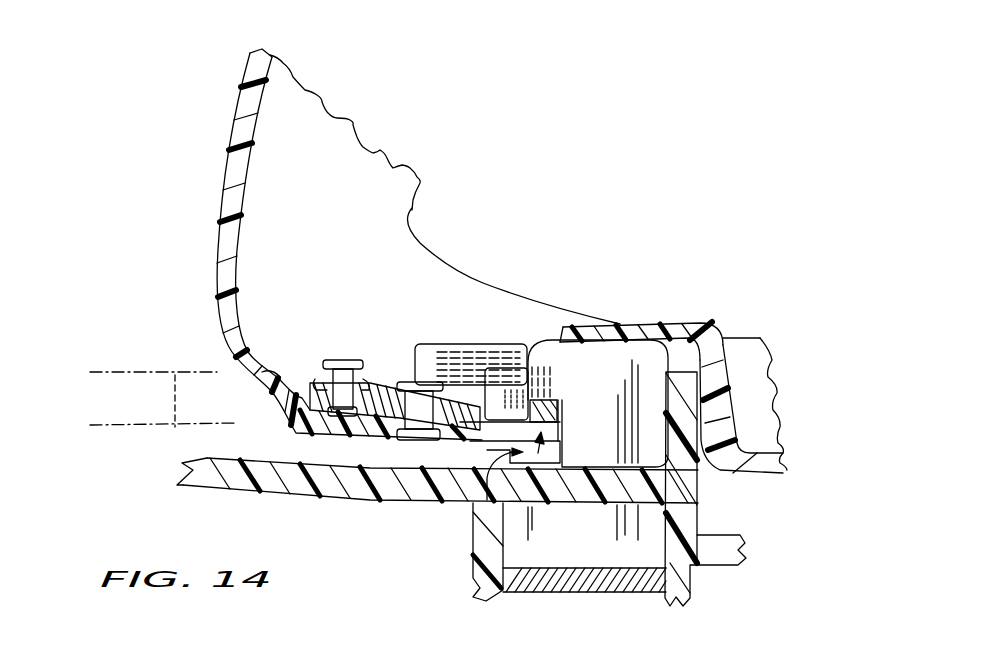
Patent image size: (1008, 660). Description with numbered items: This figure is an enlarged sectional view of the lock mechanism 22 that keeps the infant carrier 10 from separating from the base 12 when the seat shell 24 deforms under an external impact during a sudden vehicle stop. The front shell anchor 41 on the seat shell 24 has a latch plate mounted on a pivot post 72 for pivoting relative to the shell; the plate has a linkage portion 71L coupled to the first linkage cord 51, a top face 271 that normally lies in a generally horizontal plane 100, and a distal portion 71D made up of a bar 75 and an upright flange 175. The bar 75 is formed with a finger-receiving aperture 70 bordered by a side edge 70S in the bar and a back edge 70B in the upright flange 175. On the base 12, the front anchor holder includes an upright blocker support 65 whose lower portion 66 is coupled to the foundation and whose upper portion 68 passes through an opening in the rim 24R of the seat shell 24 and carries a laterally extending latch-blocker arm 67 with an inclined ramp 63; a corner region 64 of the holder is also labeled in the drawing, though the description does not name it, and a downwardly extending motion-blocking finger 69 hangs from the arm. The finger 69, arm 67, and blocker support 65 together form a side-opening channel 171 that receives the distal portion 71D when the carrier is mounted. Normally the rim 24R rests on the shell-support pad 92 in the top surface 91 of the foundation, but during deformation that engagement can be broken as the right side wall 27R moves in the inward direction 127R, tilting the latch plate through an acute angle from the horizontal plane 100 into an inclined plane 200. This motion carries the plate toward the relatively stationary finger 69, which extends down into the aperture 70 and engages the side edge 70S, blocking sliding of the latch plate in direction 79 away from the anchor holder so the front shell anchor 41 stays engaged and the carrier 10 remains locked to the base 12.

The seat shell 24 is at (220, 151).
The infant carrier 10 is at (206, 217).
The inward direction 127R is at (347, 193).
The right side wall 27R is at (218, 262).
The direction 79 is at (125, 316).
The inclined plane 200 is at (103, 372).
The generally horizontal plane 100 is at (127, 425).
The linkage portion 71L is at (297, 390).
The top surface 91 is at (223, 454).
The base 12 is at (163, 482).
The rim 24R is at (301, 435).
The shell-support pad 92 is at (330, 475).
The motion-blocking finger 69 is at (493, 408).
The side edge 70S is at (537, 372).
The finger-receiving aperture 70 is at (490, 412).
The first linkage cord 51 is at (318, 376).
The top face 271 is at (397, 392).
The bar 75 is at (384, 390).
The pivot post 72 is at (430, 382).
The distal portion 71D is at (388, 262).
The upright flange 175 is at (440, 345).
The front shell anchor 41 is at (468, 335).
The back edge 70B is at (505, 345).
The lock mechanism 22 is at (534, 326).
The inclined ramp 63 is at (540, 347).
The corner portion 64 is at (662, 324).
The blocker support 65 is at (677, 349).
The latch-blocker arm 67 is at (553, 384).
The upper portion 68 is at (643, 432).
The lower portion 66 is at (643, 545).
The side-opening channel 171 is at (527, 503).